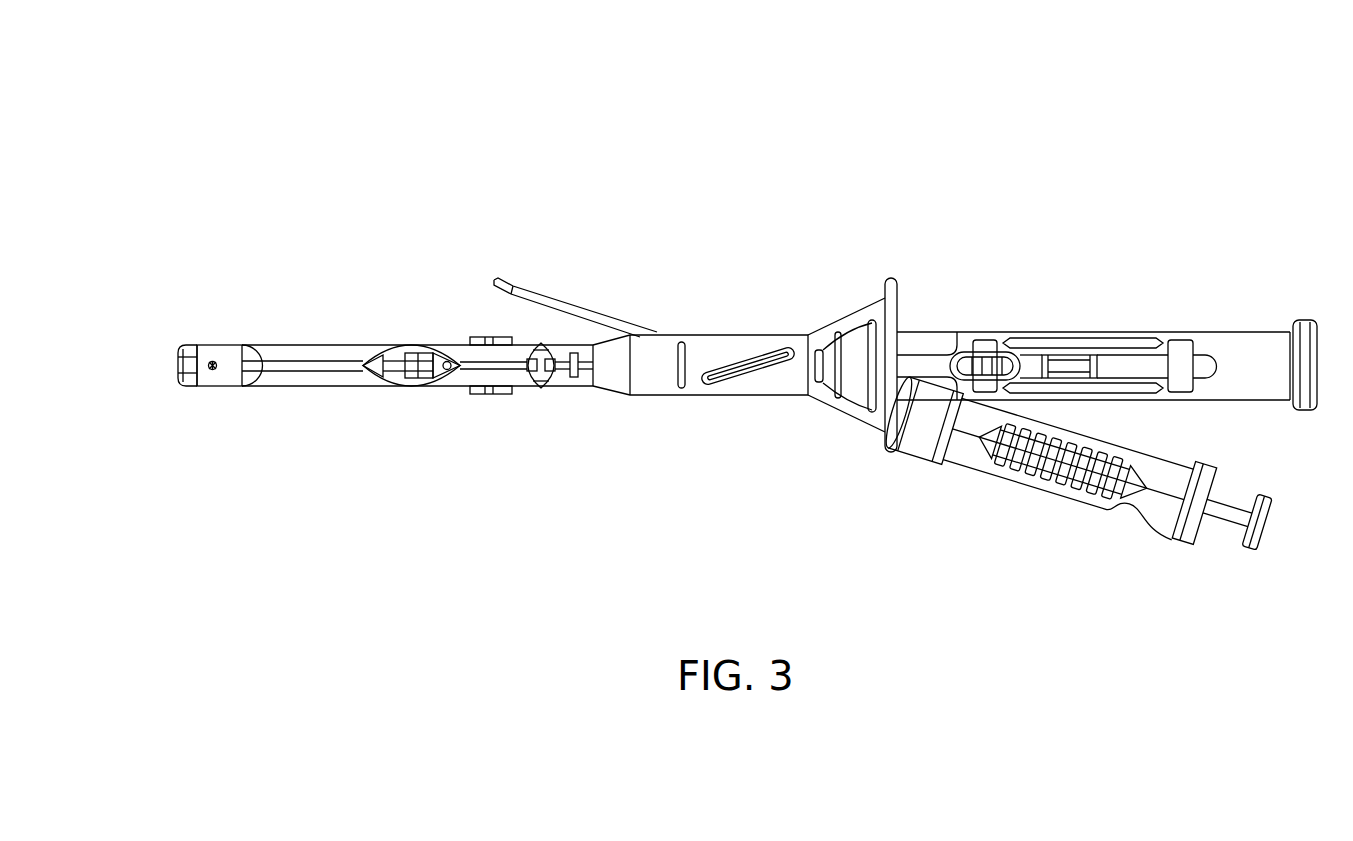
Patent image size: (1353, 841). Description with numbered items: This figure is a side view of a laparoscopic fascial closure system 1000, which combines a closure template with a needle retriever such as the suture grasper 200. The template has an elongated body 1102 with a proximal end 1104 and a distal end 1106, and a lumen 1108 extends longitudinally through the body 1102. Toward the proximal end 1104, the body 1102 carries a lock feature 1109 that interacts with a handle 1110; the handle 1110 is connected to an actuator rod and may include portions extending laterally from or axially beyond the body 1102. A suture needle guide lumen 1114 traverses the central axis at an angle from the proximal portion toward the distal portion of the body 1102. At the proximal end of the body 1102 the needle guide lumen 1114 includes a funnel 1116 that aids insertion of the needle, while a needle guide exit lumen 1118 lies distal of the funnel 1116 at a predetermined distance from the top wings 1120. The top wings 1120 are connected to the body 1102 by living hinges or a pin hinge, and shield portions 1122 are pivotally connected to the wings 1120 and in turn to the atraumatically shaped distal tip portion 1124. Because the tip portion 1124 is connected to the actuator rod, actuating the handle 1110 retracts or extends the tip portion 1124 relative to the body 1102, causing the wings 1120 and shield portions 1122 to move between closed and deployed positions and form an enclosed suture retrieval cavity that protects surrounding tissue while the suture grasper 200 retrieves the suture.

The laparoscopic fascial closure system 1000 is at (355, 160).
The distal tip portion 1124 is at (196, 358).
The distal end 1106 is at (231, 386).
The shield portions 1122 is at (308, 358).
The top wings 1120 is at (461, 348).
The needle guide exit lumen 1118 is at (653, 333).
The elongated body 1102 is at (714, 350).
The suture needle guide lumen 1114 is at (773, 358).
The funnel 1116 is at (858, 422).
The proximal end 1104 is at (1228, 342).
The handle 1110 is at (985, 345).
The lumen 1108 is at (1116, 356).
The lock feature 1109 is at (1178, 340).
The suture grasper 200 is at (972, 448).